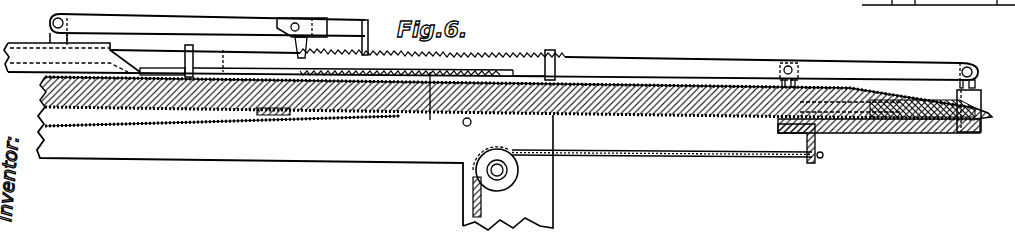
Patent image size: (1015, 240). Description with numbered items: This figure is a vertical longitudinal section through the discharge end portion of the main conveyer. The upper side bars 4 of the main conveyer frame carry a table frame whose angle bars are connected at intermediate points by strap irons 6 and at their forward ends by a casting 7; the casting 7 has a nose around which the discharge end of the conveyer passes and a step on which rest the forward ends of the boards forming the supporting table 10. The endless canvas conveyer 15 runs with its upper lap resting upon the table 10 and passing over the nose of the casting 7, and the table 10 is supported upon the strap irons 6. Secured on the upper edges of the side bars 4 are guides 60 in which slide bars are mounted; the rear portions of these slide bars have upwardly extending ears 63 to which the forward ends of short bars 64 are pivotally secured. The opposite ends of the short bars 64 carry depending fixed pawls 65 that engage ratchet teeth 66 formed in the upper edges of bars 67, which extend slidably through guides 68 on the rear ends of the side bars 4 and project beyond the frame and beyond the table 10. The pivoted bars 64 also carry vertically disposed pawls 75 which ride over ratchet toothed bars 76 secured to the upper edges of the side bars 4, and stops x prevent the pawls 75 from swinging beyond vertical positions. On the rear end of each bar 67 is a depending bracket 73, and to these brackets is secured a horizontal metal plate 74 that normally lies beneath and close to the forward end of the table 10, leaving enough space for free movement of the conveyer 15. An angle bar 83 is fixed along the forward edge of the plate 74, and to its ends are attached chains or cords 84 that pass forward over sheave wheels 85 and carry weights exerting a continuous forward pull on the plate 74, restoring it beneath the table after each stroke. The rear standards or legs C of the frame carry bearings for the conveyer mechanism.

The ear 63 is at (48, 36).
The guide 60 is at (184, 45).
The short bar 64 is at (213, 10).
The vertically disposed pawl 75 is at (275, 40).
The stop x is at (328, 35).
The depending fixed pawl 65 is at (377, 34).
The ratchet tooth 66 is at (480, 58).
The guide 68 is at (557, 53).
The bar 67 is at (648, 65).
The depending bracket 73 is at (773, 66).
The supporting table 10 is at (230, 146).
The strap iron 6 is at (516, 111).
The endless canvas conveyer 15 is at (367, 141).
The ratchet toothed bar 76 is at (430, 120).
The upper side bar 4 is at (277, 177).
The sheave wheel 85 is at (448, 197).
The chain or cord 84 is at (668, 155).
The angle bar 83 is at (812, 165).
The horizontal metal plate 74 is at (868, 133).
The casting 7 is at (917, 133).
The rear standard or leg C is at (555, 203).